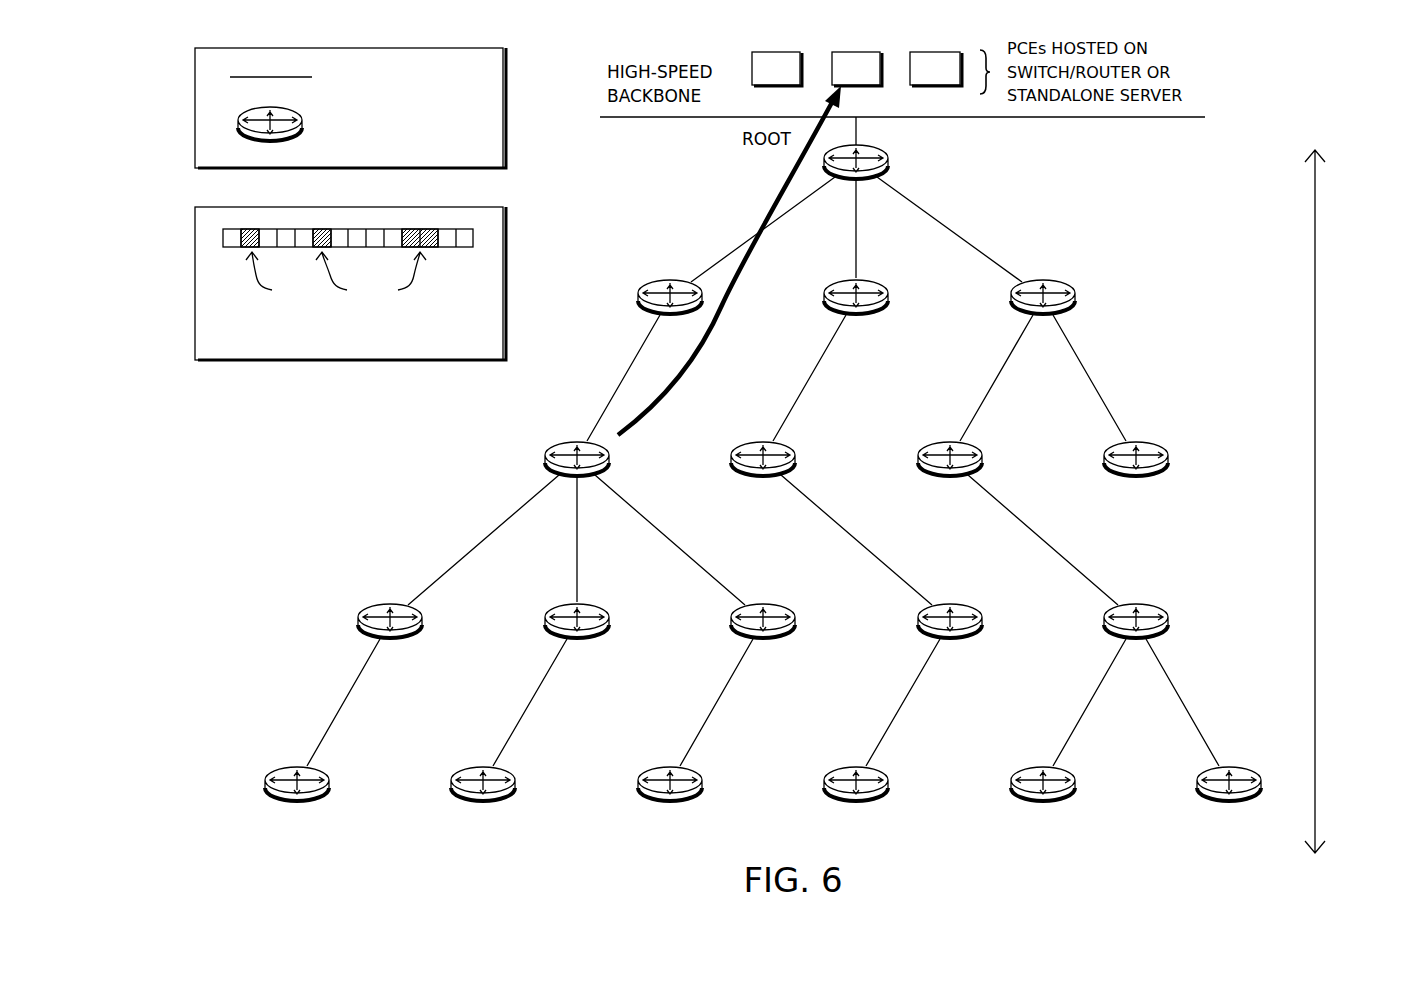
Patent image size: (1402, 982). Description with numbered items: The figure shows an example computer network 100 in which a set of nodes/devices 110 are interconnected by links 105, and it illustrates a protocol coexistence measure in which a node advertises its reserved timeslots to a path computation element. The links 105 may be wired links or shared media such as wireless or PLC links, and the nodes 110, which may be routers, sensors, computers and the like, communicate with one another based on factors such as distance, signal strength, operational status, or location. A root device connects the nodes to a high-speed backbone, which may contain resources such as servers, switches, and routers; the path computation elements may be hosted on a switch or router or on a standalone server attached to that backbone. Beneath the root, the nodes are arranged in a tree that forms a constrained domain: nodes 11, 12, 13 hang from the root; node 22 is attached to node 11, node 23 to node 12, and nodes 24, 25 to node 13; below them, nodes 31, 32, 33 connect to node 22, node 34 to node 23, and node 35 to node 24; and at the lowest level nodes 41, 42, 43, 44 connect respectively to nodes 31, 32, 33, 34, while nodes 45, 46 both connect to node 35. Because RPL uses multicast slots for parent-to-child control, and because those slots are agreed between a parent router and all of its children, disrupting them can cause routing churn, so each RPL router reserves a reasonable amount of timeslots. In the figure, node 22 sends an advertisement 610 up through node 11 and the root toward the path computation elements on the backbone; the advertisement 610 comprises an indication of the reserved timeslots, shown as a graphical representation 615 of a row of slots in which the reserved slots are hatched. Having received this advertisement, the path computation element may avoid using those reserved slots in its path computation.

The computer network 100 is at (1297, 105).
The links 105 is at (333, 77).
The nodes/devices 110 is at (345, 124).
The advertisement 610 is at (624, 415).
The graphical representation 615 is at (348, 288).
The node 11 is at (670, 319).
The node 12 is at (856, 319).
The node 13 is at (1043, 319).
The node 22 is at (579, 477).
The node 23 is at (763, 479).
The node 24 is at (950, 479).
The node 25 is at (1136, 479).
The node 31 is at (390, 641).
The node 32 is at (577, 641).
The node 33 is at (763, 641).
The node 34 is at (950, 641).
The node 35 is at (1136, 641).
The node 41 is at (297, 804).
The node 42 is at (483, 804).
The node 43 is at (670, 804).
The node 44 is at (856, 804).
The node 45 is at (1043, 804).
The node 46 is at (1229, 804).